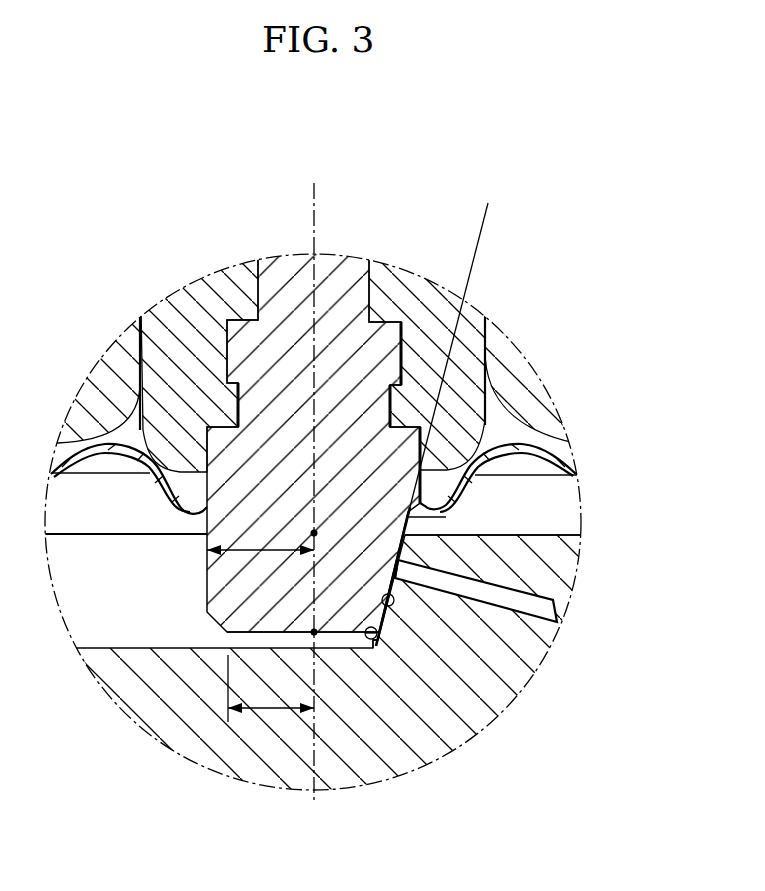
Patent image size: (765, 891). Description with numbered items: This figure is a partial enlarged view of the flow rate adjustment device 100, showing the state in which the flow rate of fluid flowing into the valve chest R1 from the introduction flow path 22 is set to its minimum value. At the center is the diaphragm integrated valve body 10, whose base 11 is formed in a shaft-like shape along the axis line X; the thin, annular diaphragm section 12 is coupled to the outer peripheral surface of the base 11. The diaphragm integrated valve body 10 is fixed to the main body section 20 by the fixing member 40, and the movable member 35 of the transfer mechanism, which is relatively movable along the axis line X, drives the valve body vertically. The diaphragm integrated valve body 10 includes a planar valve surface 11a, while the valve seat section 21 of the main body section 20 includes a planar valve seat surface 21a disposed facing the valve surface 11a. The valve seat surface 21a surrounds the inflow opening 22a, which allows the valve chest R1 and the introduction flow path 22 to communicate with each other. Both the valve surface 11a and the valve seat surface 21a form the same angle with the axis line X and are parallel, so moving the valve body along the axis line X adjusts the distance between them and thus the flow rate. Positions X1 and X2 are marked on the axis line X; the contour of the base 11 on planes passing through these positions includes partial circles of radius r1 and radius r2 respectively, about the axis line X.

The flow rate adjustment device 100 is at (588, 212).
The diaphragm integrated valve body 10 is at (196, 600).
The base 11 is at (335, 640).
The valve surface 11a is at (383, 596).
The diaphragm section 12 is at (160, 487).
The main body section 20 is at (413, 753).
The valve seat section 21 is at (412, 603).
The valve seat surface 21a is at (378, 637).
The introduction flow path 22 is at (553, 607).
The inflow opening 22a is at (412, 572).
The movable member 35 is at (487, 427).
The fixing member 40 is at (507, 363).
The axis line X is at (313, 777).
The position X1 is at (316, 530).
The position X2 is at (311, 633).
The radius r1 is at (260, 535).
The radius r2 is at (271, 688).
The valve chest R1 is at (127, 580).